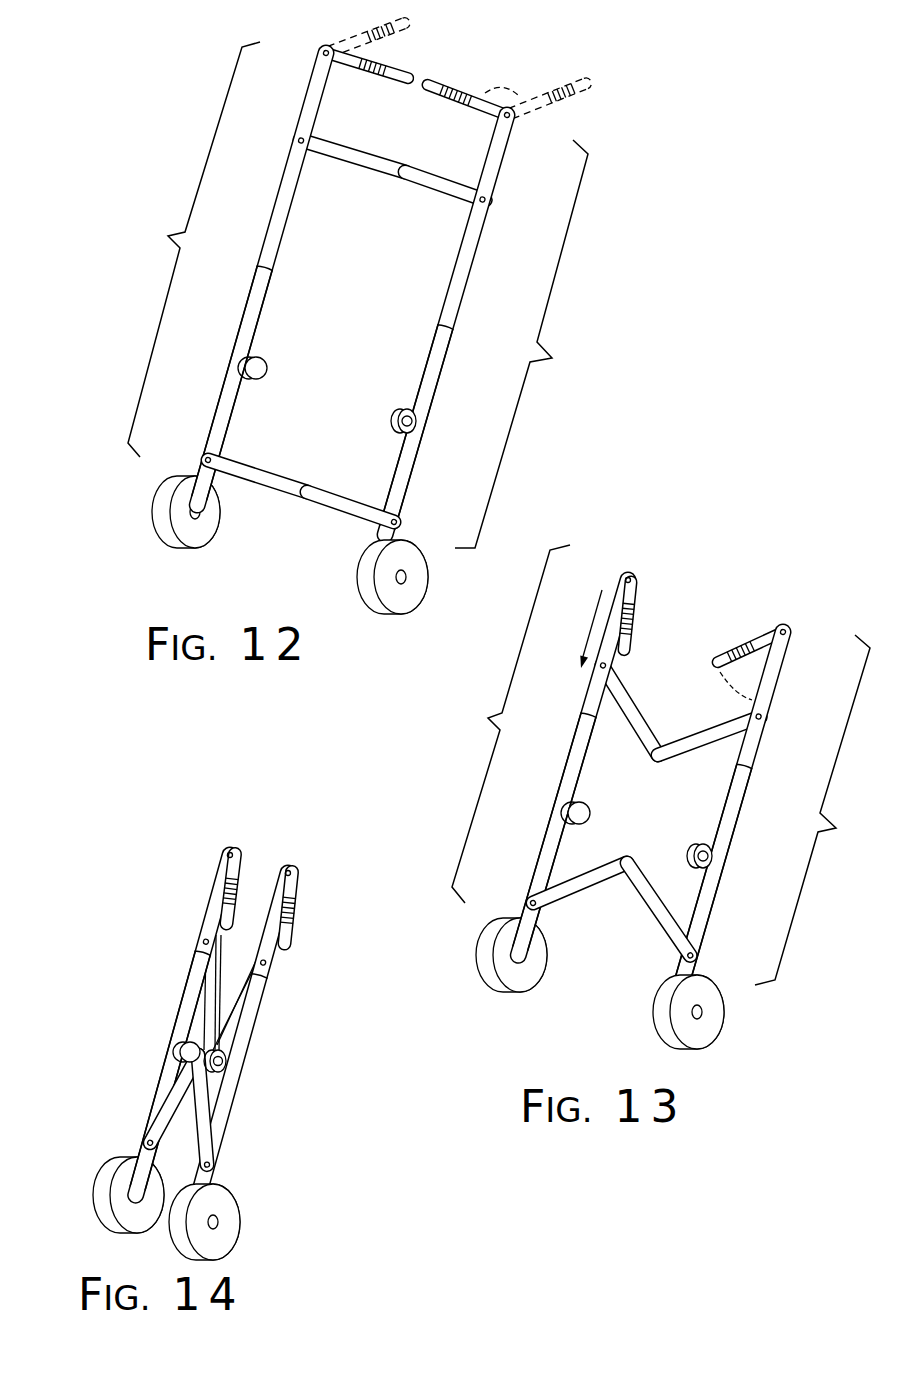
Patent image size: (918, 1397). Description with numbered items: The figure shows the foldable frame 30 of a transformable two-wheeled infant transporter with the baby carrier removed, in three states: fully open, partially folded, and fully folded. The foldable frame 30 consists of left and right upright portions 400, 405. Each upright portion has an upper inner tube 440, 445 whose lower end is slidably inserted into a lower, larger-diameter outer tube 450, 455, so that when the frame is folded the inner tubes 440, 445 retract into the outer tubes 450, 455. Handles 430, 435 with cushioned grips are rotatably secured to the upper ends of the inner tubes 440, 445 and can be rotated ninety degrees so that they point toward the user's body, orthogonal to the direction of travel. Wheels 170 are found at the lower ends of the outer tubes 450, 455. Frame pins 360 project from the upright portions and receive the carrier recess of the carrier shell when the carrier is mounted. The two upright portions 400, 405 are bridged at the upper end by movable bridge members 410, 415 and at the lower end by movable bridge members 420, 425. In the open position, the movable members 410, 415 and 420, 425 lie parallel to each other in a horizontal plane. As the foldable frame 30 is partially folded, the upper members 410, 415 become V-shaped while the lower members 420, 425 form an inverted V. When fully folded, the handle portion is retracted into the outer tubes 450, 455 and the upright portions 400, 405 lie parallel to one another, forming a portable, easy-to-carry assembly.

In FIG. 12, the foldable frame 30 is at (188, 92).
In FIG. 13, the foldable frame 30 is at (638, 518).
In FIG. 14, the foldable frame 30 is at (157, 853).
In FIG. 12, the wheels 170 is at (173, 539).
In FIG. 13, the wheels 170 is at (498, 982).
In FIG. 14, the wheels 170 is at (115, 1226).
In FIG. 12, the frame pins 360 is at (263, 360).
In FIG. 13, the frame pins 360 is at (586, 804).
In FIG. 12, the left upright portion 400 is at (187, 249).
In FIG. 13, the left upright portion 400 is at (500, 724).
In FIG. 12, the right upright portion 405 is at (529, 344).
In FIG. 13, the right upright portion 405 is at (823, 810).
In FIG. 12, the movable bridge member 410 is at (355, 151).
In FIG. 13, the movable bridge member 410 is at (632, 700).
In FIG. 12, the movable bridge member 415 is at (444, 179).
In FIG. 13, the movable bridge member 415 is at (698, 733).
In FIG. 12, the movable bridge member 420 is at (261, 485).
In FIG. 13, the movable bridge member 420 is at (583, 888).
In FIG. 14, the movable bridge member 420 is at (179, 1097).
In FIG. 12, the movable bridge member 425 is at (341, 513).
In FIG. 13, the movable bridge member 425 is at (660, 923).
In FIG. 14, the movable bridge member 425 is at (210, 1112).
In FIG. 12, the handle 430 is at (386, 64).
In FIG. 13, the handle 430 is at (638, 607).
In FIG. 14, the handle 430 is at (243, 862).
In FIG. 12, the handle 435 is at (454, 88).
In FIG. 13, the handle 435 is at (741, 646).
In FIG. 14, the handle 435 is at (296, 923).
In FIG. 12, the inner tube 440 is at (280, 188).
In FIG. 13, the inner tube 440 is at (590, 683).
In FIG. 14, the inner tube 440 is at (208, 906).
In FIG. 12, the inner tube 445 is at (500, 168).
In FIG. 13, the inner tube 445 is at (759, 743).
In FIG. 14, the inner tube 445 is at (244, 1030).
In FIG. 12, the outer tube 450 is at (220, 395).
In FIG. 13, the outer tube 450 is at (544, 842).
In FIG. 14, the outer tube 450 is at (150, 1112).
In FIG. 12, the outer tube 455 is at (434, 410).
In FIG. 13, the outer tube 455 is at (732, 841).